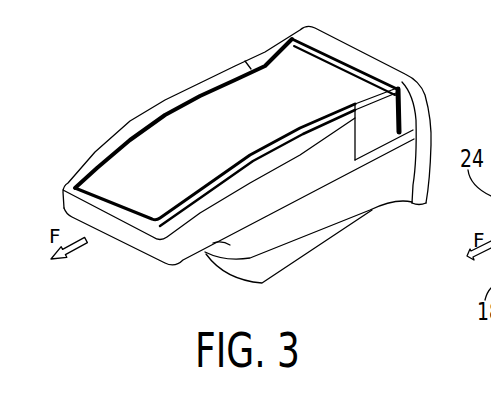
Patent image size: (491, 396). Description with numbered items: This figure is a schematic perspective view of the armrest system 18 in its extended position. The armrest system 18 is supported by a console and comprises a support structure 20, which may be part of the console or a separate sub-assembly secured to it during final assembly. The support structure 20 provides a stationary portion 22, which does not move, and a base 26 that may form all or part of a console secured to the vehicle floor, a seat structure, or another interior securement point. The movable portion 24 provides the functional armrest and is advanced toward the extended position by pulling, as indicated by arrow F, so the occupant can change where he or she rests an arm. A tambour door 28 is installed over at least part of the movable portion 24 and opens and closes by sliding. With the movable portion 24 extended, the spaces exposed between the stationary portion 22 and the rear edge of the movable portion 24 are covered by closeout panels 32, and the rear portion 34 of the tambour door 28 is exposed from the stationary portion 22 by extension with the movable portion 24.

The armrest system 18 is at (93, 263).
The support structure 20 is at (372, 206).
The stationary portion 22 is at (415, 102).
The movable portion 24 is at (65, 195).
The base 26 is at (317, 255).
The tambour door 28 is at (122, 163).
The closeout panels 32 is at (390, 128).
The rear portion of tambour door 34 is at (291, 40).